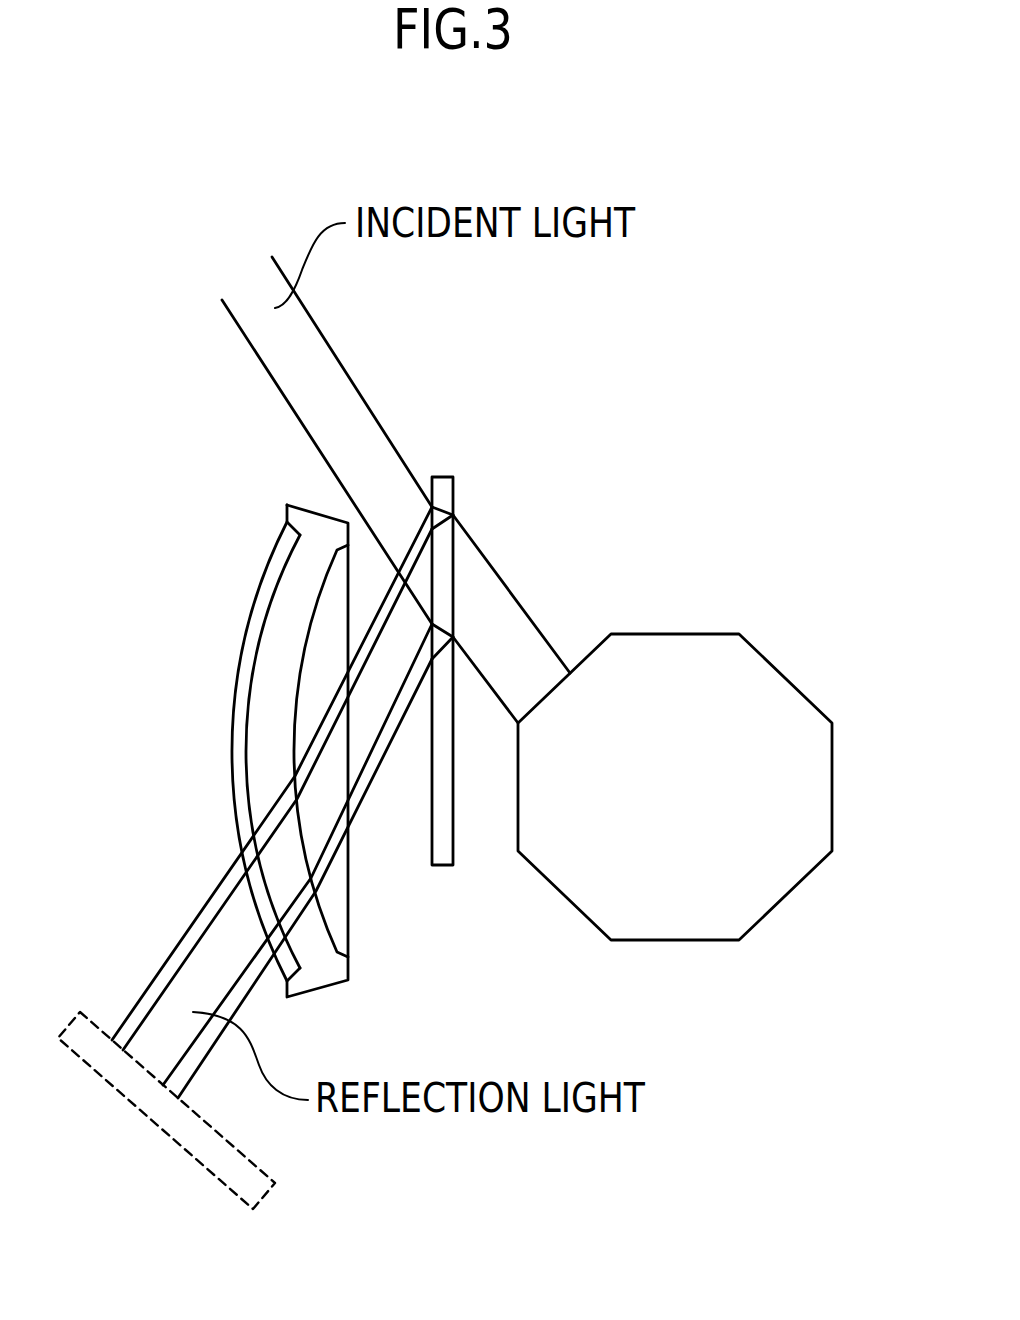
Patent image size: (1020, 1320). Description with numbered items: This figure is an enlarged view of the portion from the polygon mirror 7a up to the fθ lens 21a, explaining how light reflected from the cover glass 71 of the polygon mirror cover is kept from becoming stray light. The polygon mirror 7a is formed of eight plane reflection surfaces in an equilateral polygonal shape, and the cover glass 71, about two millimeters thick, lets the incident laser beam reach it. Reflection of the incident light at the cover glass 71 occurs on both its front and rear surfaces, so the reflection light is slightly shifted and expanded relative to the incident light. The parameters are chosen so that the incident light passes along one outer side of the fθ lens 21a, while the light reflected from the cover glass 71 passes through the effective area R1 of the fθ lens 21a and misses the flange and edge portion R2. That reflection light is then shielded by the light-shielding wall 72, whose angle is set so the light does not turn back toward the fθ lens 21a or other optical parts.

The cover glass 71 is at (448, 495).
The fθ lens 21a is at (288, 719).
The effective area R1 is at (232, 750).
The edge portion R2 is at (285, 515).
The polygon mirror 7a is at (765, 892).
The light-shielding wall 72 is at (170, 1137).